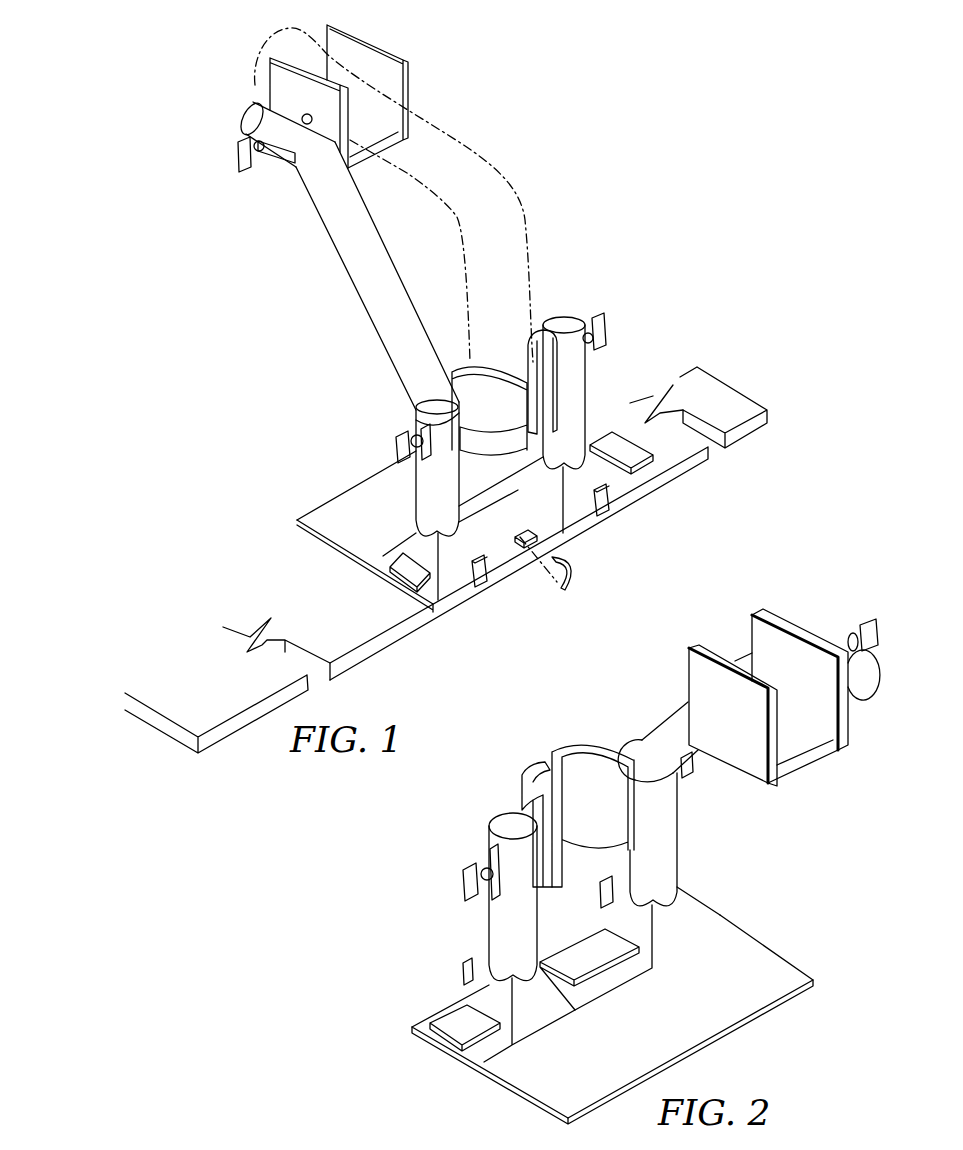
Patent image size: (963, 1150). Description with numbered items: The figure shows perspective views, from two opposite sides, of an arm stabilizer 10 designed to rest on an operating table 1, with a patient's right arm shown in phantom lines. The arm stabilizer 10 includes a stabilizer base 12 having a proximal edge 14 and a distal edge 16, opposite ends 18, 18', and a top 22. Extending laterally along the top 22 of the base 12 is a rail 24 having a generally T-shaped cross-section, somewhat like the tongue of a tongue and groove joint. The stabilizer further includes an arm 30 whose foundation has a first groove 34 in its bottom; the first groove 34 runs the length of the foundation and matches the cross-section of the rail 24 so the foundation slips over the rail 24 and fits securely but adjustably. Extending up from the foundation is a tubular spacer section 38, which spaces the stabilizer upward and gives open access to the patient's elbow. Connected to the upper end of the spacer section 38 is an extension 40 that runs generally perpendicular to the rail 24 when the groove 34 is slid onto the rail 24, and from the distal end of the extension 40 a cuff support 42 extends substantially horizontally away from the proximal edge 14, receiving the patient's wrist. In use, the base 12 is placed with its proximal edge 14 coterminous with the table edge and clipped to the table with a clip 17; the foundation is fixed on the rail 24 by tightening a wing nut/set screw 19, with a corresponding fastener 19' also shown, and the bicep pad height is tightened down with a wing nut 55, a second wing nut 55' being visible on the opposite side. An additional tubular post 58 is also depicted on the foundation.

In FIG. 1, the operating table 1 is at (197, 712).
In FIG. 1, the arm stabilizer 10 is at (608, 210).
In FIG. 1, the stabilizer base 12 is at (327, 518).
In FIG. 2, the stabilizer base 12 is at (646, 1048).
In FIG. 1, the proximal edge 14 is at (449, 588).
In FIG. 1, the distal edge 16 is at (345, 493).
In FIG. 1, the clip 17 is at (575, 565).
In FIG. 1, the end 18 is at (358, 572).
In FIG. 1, the end 18' is at (668, 468).
In FIG. 1, the wing nut/set screw 19 is at (499, 596).
In FIG. 1, the retaining clip 19' is at (642, 509).
In FIG. 2, the top 22 is at (745, 955).
In FIG. 2, the rail 24 is at (447, 1025).
In FIG. 1, the arm 30 is at (324, 329).
In FIG. 2, the first groove 34 is at (683, 889).
In FIG. 1, the spacer section 38 is at (456, 505).
In FIG. 2, the spacer section 38 is at (662, 814).
In FIG. 1, the extension 40 is at (342, 220).
In FIG. 2, the extension 40 is at (663, 732).
In FIG. 1, the cuff support 42 is at (293, 150).
In FIG. 2, the cuff support 42 is at (858, 678).
In FIG. 1, the wing nut 55 is at (388, 426).
In FIG. 2, the clamp 55' is at (456, 856).
In FIG. 1, the support post 58 is at (572, 389).
In FIG. 2, the support post 58 is at (496, 930).